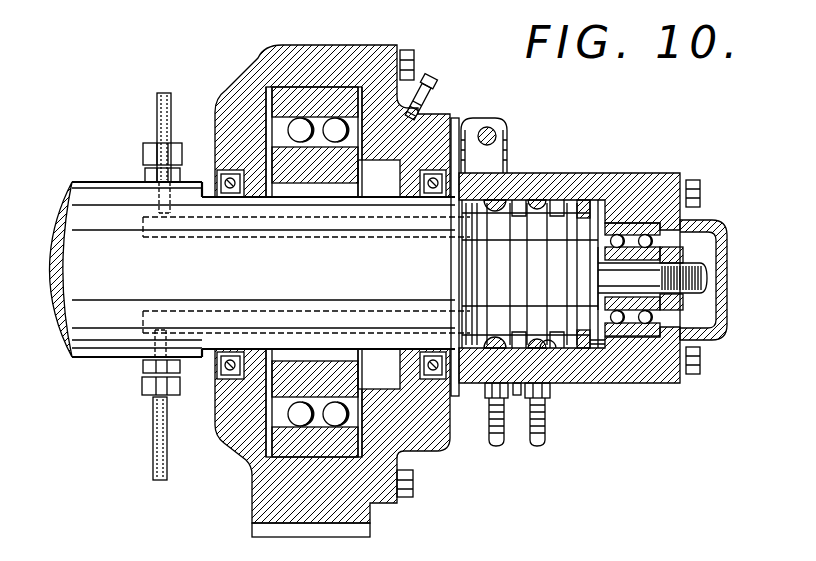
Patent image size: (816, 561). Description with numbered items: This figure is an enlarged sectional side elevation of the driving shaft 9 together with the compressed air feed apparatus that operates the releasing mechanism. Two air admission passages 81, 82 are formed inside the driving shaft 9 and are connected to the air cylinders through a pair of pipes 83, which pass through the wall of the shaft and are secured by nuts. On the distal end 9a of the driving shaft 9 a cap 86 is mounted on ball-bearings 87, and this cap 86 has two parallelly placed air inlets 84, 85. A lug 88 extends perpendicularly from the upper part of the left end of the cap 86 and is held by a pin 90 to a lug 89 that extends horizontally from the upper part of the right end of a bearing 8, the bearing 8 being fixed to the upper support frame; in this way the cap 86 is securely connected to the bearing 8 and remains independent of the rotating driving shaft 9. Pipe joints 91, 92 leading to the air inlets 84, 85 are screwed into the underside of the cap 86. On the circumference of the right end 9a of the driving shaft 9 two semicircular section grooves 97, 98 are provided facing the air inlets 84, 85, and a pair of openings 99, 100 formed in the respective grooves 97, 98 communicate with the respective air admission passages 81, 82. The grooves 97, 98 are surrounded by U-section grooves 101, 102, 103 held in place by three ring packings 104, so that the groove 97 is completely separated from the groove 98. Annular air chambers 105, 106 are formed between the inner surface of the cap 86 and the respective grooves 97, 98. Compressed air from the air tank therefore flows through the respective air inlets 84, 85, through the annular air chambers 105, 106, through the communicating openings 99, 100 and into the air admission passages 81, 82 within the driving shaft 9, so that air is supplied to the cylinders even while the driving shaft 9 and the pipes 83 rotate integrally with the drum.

The bearing 8 is at (262, 88).
The driving shaft 9 is at (311, 276).
The distal end of the driving shaft 9a is at (625, 373).
The air admission passage 81 is at (147, 235).
The air admission passage 82 is at (147, 311).
The pipe 83 is at (157, 104).
The air inlet 84 is at (553, 373).
The air inlet 85 is at (456, 393).
The cap 86 is at (662, 383).
The ball-bearings 87 is at (652, 185).
The lug 88 is at (488, 118).
The lug 89 is at (455, 118).
The pin 90 is at (493, 130).
The pipe joint 91 is at (549, 420).
The pipe joint 92 is at (492, 440).
The semicircular section groove 97 is at (537, 282).
The semicircular section groove 98 is at (495, 260).
The opening 99 is at (557, 200).
The opening 100 is at (447, 320).
The U-section groove 101 is at (508, 200).
The U-section groove 102 is at (463, 238).
The U-section groove 103 is at (605, 200).
The ring packing 104 is at (532, 200).
The annular air chamber 105 is at (598, 373).
The annular air chamber 106 is at (517, 396).